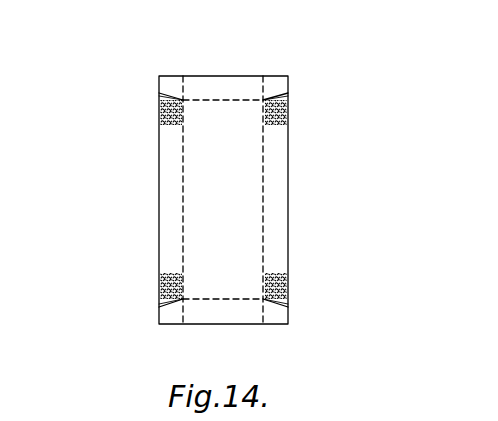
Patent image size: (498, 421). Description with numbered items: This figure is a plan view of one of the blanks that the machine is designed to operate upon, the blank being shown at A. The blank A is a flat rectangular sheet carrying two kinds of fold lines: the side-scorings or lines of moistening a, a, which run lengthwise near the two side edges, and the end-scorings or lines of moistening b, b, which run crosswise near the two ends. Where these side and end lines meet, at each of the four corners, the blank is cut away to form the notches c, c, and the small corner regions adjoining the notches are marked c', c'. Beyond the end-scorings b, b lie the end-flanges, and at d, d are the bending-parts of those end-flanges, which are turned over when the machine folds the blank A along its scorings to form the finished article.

The blank A is at (249, 165).
The side-scorings a is at (181, 198).
The end-scorings b is at (228, 98).
The notches c is at (223, 201).
The glued (adhesive) areas c' is at (210, 199).
The bending-parts of the end-flanges d is at (157, 83).